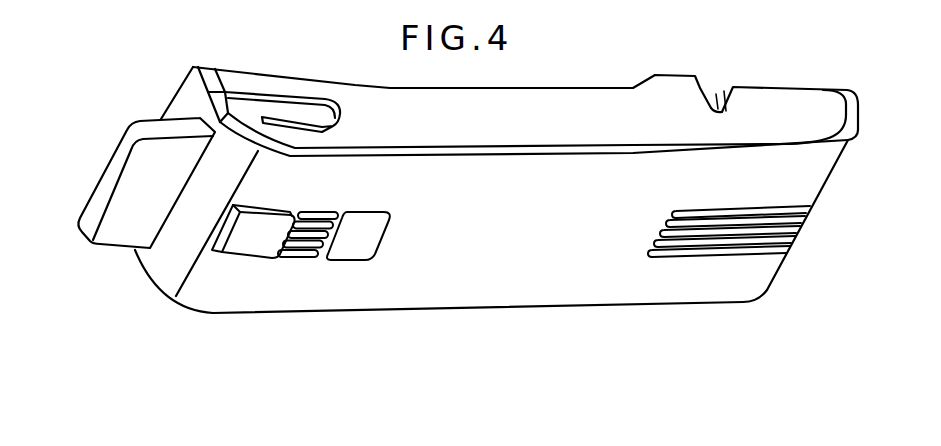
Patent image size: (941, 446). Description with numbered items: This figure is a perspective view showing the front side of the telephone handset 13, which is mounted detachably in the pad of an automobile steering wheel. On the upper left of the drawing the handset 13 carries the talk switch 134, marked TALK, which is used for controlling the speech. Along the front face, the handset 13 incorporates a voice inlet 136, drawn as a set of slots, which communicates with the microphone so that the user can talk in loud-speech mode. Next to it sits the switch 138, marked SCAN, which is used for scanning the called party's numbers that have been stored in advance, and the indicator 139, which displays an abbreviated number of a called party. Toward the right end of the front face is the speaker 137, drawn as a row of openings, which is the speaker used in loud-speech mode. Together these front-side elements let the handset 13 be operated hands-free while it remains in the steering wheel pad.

The handset 13 is at (481, 310).
The talk switch 134 is at (132, 123).
The voice inlet 136 is at (300, 259).
The speaker 137 is at (689, 258).
The switch for scanning called party's numbers 138 is at (232, 256).
The indicator 139 is at (357, 261).